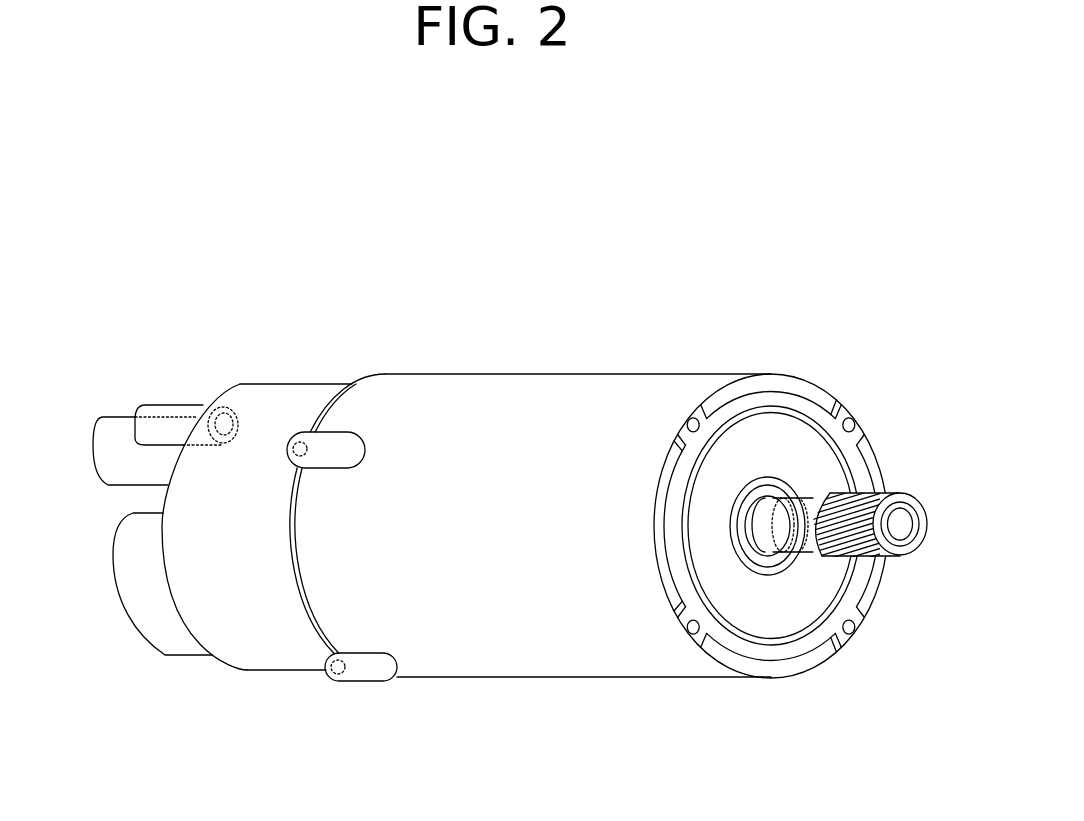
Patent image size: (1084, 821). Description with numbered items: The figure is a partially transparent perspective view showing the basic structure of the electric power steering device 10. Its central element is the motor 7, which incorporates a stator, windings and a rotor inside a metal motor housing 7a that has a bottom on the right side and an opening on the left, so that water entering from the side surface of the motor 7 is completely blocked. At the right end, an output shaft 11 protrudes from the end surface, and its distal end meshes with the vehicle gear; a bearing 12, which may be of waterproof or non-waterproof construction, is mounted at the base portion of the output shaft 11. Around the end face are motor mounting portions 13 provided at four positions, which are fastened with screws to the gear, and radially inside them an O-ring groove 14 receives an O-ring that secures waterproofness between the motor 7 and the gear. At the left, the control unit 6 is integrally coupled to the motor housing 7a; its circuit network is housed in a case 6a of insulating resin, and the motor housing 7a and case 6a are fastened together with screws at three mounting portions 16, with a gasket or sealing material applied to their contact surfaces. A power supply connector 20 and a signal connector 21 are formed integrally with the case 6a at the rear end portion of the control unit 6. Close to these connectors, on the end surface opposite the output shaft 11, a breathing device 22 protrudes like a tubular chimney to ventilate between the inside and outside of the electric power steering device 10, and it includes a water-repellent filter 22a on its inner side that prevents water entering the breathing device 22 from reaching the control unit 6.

The control unit 6 is at (312, 377).
The case 6a is at (263, 672).
The motor 7 is at (548, 373).
The motor housing 7a is at (428, 392).
The electric power steering device 10 is at (668, 367).
The output shaft 11 is at (933, 507).
The bearing 12 is at (773, 582).
The motor mounting portions 13 is at (690, 637).
The O-ring groove 14 is at (846, 412).
The mounting portions 16 is at (340, 683).
The power supply connector 20 is at (105, 422).
The signal connector 21 is at (125, 620).
The breathing device 22 is at (163, 400).
The water-repellent filter 22a is at (238, 417).